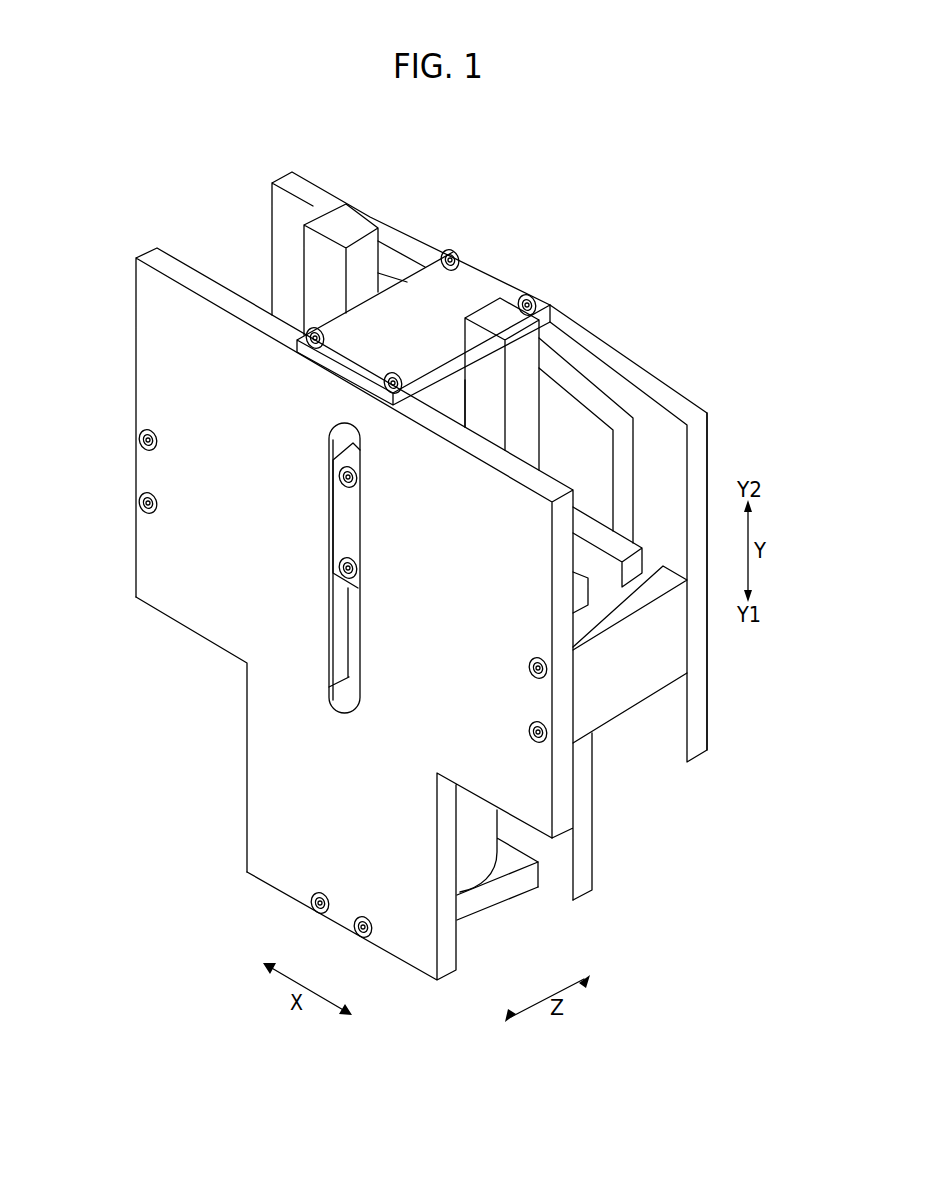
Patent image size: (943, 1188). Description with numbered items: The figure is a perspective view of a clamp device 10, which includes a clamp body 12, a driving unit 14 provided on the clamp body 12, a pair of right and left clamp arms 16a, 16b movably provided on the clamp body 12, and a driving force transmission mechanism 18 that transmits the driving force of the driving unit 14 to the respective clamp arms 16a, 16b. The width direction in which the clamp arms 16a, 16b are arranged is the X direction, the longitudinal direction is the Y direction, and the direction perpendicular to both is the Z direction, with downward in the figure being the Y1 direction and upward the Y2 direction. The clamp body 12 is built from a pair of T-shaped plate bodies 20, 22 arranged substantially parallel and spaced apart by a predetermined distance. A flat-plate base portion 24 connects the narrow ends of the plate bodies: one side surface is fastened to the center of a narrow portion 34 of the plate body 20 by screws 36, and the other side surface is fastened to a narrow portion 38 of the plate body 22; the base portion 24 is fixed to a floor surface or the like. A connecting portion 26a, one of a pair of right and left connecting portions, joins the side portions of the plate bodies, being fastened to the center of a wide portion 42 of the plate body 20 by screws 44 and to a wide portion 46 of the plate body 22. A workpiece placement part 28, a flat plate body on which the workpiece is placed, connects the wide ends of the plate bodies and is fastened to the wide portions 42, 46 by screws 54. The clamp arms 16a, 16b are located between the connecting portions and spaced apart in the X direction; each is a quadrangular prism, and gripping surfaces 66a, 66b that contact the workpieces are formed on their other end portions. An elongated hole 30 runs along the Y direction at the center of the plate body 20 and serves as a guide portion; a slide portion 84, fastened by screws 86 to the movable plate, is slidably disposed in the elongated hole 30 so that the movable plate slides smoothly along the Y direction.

The clamp device 10 is at (463, 132).
The clamp body 12 is at (618, 350).
The driving unit 14 is at (512, 858).
The clamp arm 16a is at (501, 297).
The clamp arm 16b is at (339, 215).
The driving force transmission mechanism 18 is at (648, 468).
The plate body 20 is at (142, 257).
The plate body 22 is at (271, 181).
The base portion 24 is at (480, 908).
The connecting portion 26a is at (628, 692).
The workpiece placement part 28 is at (468, 272).
The elongated hole 30 is at (342, 692).
The narrow portion 34 is at (258, 826).
The screws 36 is at (362, 939).
The narrow portion 38 is at (582, 860).
The wide portion 42 is at (145, 551).
The screws 44 is at (140, 503).
The wide portion 46 is at (695, 718).
The screws 54 is at (391, 377).
The gripping surface 66a is at (463, 333).
The gripping surface 66b is at (385, 258).
The slide portion 84 is at (342, 527).
The screws 86 is at (338, 473).